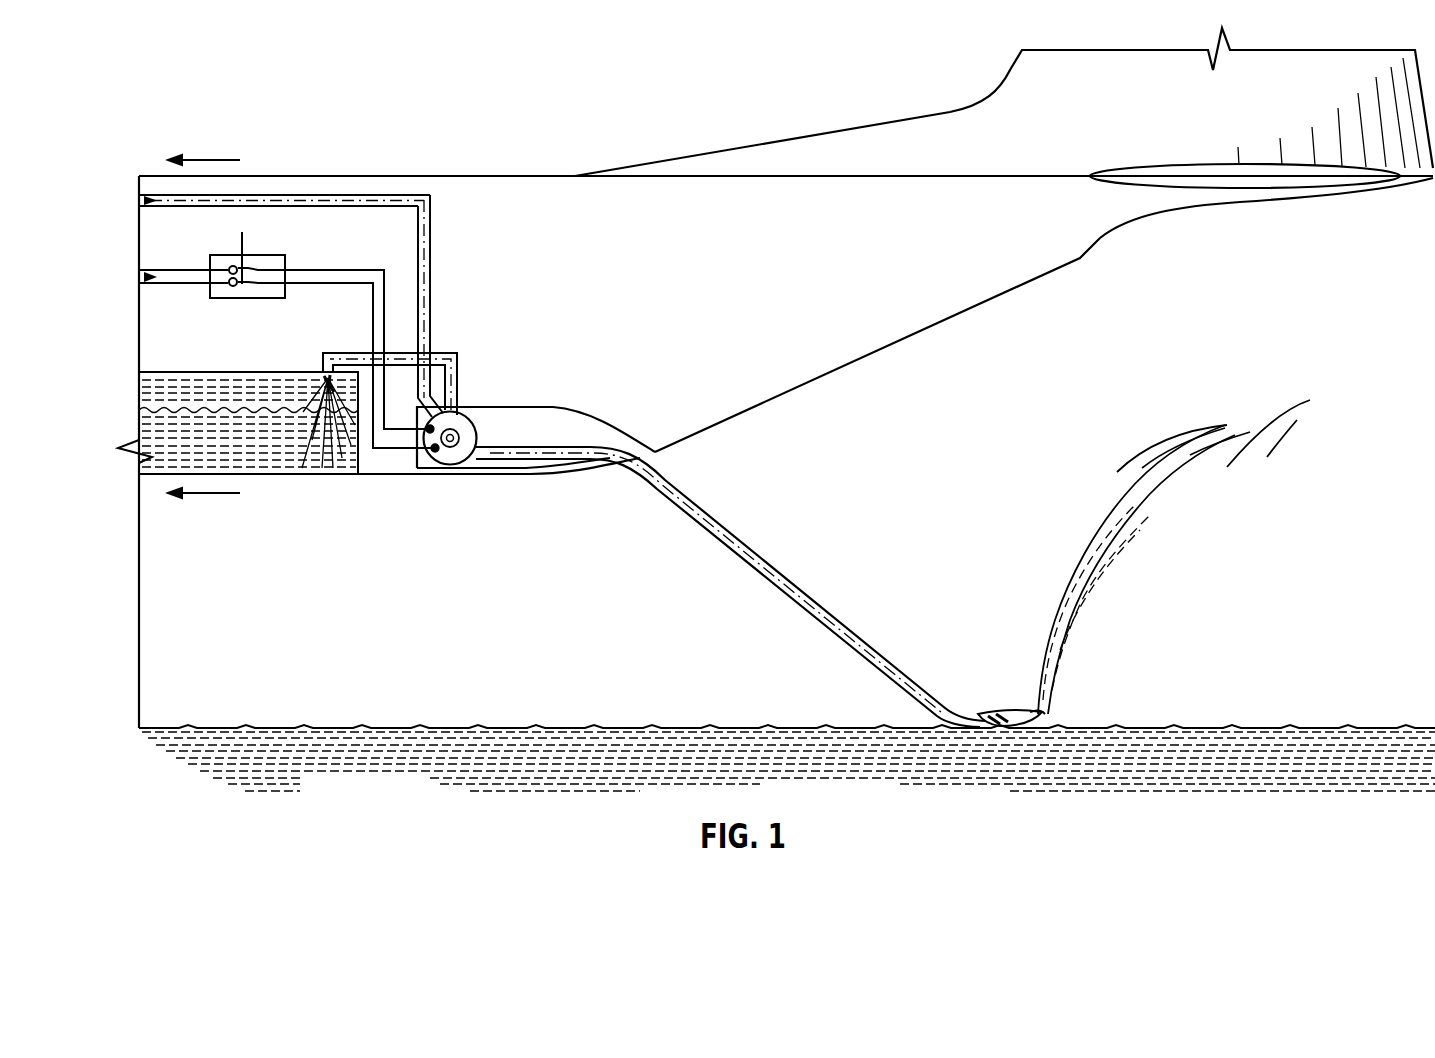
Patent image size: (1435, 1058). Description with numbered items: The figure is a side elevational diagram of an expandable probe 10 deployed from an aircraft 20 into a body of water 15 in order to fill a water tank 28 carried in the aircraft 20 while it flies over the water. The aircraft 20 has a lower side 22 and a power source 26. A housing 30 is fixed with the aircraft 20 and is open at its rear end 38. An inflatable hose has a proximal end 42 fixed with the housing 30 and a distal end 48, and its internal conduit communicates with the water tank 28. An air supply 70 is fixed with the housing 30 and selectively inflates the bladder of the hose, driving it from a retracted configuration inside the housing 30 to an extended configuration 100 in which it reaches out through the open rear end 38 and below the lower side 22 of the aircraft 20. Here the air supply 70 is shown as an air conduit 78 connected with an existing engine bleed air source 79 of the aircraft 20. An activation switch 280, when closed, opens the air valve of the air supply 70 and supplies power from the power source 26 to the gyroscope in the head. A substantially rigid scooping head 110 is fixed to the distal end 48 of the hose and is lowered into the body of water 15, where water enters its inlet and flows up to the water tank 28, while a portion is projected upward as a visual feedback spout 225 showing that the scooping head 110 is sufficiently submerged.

The expandable probe 10 is at (907, 482).
The body of water 15 is at (425, 727).
The aircraft 20 is at (298, 175).
The lower side 22 is at (310, 475).
The power source 26 is at (146, 277).
The water tank 28 is at (168, 372).
The housing 30 is at (553, 407).
The rear end 38 is at (652, 452).
The proximal end 42 is at (490, 450).
The distal end 48 is at (968, 708).
The air supply 70 is at (462, 410).
The air conduit 78 is at (432, 215).
The engine bleed air source 79 is at (146, 200).
The extended configuration 100 is at (655, 516).
The scooping head 110 is at (1045, 712).
The visual feedback spout 225 is at (1177, 538).
The activation switch 280 is at (243, 252).